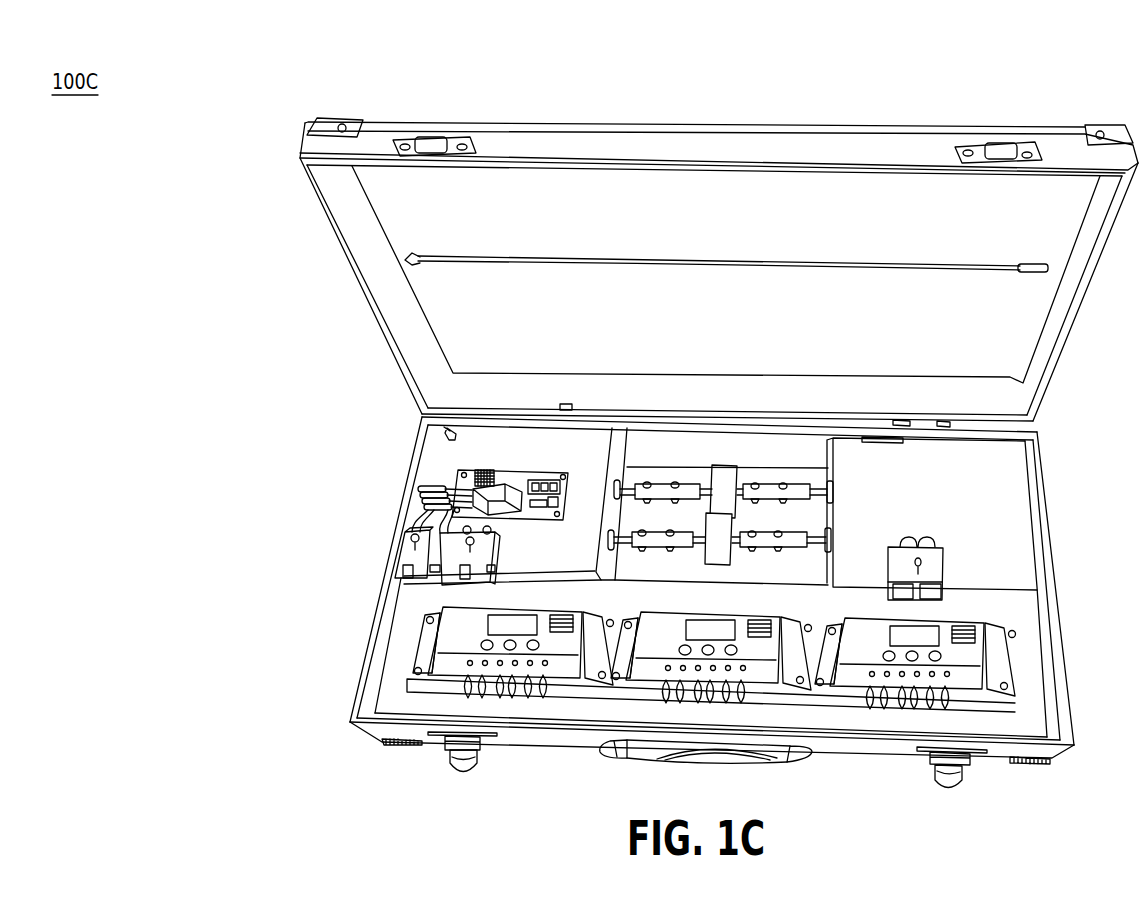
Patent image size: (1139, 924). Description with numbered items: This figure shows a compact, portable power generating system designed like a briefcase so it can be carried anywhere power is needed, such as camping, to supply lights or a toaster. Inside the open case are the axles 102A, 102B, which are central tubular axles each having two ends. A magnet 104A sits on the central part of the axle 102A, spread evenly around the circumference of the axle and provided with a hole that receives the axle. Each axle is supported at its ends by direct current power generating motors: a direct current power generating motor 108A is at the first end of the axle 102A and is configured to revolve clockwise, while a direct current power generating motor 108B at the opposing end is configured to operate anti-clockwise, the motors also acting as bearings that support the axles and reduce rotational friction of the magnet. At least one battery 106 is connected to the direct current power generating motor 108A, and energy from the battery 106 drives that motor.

The axle 102A is at (633, 470).
The axle 102B is at (695, 533).
The magnet 104A is at (717, 465).
The battery 106 is at (400, 555).
The direct current power generating motor 108A is at (420, 485).
The direct current power generating motor 108B is at (1028, 518).